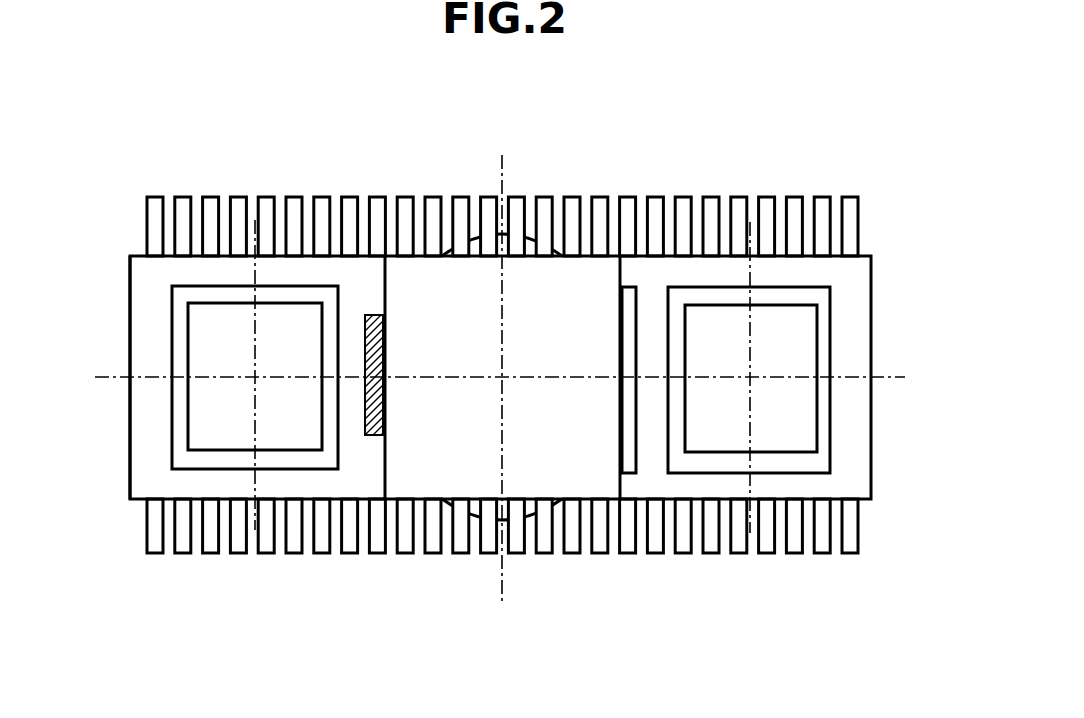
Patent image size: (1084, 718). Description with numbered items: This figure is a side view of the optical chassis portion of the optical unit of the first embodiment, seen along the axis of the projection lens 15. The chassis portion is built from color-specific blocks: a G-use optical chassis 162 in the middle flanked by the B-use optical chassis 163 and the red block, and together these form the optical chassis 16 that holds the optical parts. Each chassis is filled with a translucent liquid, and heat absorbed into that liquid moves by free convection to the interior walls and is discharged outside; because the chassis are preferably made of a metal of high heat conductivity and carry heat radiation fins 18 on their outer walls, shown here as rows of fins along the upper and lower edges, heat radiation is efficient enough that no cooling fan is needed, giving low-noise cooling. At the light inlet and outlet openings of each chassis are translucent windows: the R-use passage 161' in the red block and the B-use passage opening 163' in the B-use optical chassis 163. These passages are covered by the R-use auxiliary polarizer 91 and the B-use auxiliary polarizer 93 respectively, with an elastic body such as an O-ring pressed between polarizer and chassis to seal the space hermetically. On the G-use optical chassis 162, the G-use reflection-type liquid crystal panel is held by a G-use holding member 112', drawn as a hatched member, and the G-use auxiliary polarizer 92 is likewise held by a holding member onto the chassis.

The projection lens 15 is at (527, 242).
The optical chassis 16 is at (872, 477).
The heat radiation fin 18 is at (155, 197).
The R-use auxiliary polarizer 91 is at (798, 474).
The G-use auxiliary polarizer 92 is at (625, 478).
The B-use auxiliary polarizer 93 is at (193, 468).
The G-use holding member 112' is at (342, 465).
The R-use passage 161' is at (819, 366).
The G-use optical chassis 162 is at (542, 475).
The B-use optical chassis 163 is at (222, 401).
The B-use passage opening 163' is at (184, 367).